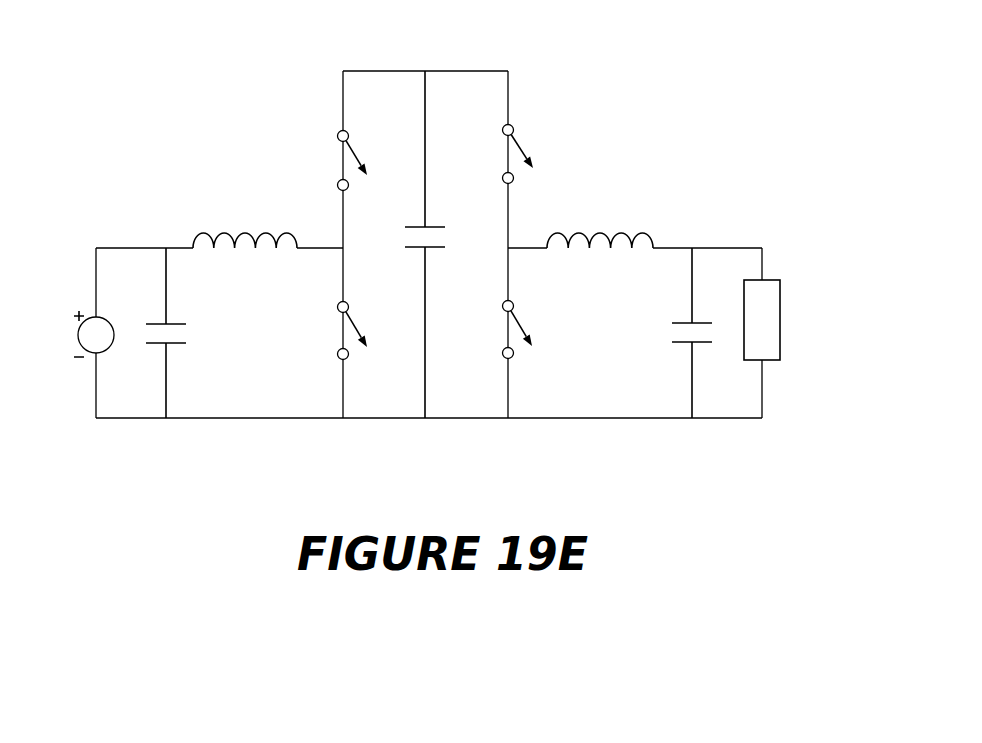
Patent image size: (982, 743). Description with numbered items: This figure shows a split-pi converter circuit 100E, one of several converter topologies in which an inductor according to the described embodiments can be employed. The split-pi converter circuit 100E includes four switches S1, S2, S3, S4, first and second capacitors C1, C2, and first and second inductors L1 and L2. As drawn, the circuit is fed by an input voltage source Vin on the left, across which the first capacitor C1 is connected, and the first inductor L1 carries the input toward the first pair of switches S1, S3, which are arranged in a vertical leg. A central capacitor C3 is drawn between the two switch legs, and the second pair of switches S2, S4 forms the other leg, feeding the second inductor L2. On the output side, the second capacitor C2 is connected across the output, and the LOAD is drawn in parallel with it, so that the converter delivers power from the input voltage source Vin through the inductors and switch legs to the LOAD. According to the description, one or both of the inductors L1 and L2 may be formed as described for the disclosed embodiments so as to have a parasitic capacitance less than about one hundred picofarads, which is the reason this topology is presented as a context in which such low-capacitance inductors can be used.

The split-pi converter circuit 100E is at (748, 205).
The input voltage source Vin is at (76, 333).
The first capacitor C1 is at (184, 333).
The second capacitor C2 is at (677, 333).
The center capacitor C3 is at (416, 244).
The first inductor L1 is at (245, 225).
The second inductor L2 is at (600, 223).
The switch S1 is at (332, 161).
The switch S2 is at (531, 154).
The switch S3 is at (334, 331).
The switch S4 is at (531, 330).
The load LOAD is at (806, 333).